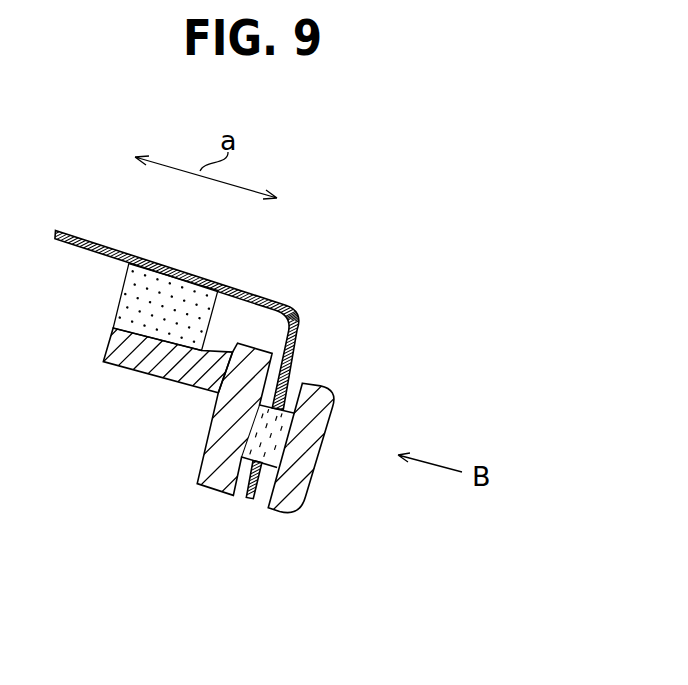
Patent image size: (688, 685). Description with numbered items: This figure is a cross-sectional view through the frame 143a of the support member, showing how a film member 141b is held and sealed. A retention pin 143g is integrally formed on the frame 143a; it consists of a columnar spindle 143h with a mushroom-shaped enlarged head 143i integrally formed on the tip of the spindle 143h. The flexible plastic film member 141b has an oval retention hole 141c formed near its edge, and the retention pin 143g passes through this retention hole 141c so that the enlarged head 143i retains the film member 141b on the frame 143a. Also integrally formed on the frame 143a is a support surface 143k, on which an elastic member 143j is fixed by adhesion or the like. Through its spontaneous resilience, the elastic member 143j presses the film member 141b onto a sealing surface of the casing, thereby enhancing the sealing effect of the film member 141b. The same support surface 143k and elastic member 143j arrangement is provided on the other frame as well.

The film member 141b is at (106, 245).
The retention hole 141c is at (262, 480).
The frame 143a is at (217, 457).
The retention pin 143g is at (366, 446).
The spindle 143h is at (300, 385).
The enlarged head 143i is at (318, 428).
The elastic member 143j is at (190, 288).
The support surface 143k is at (133, 362).